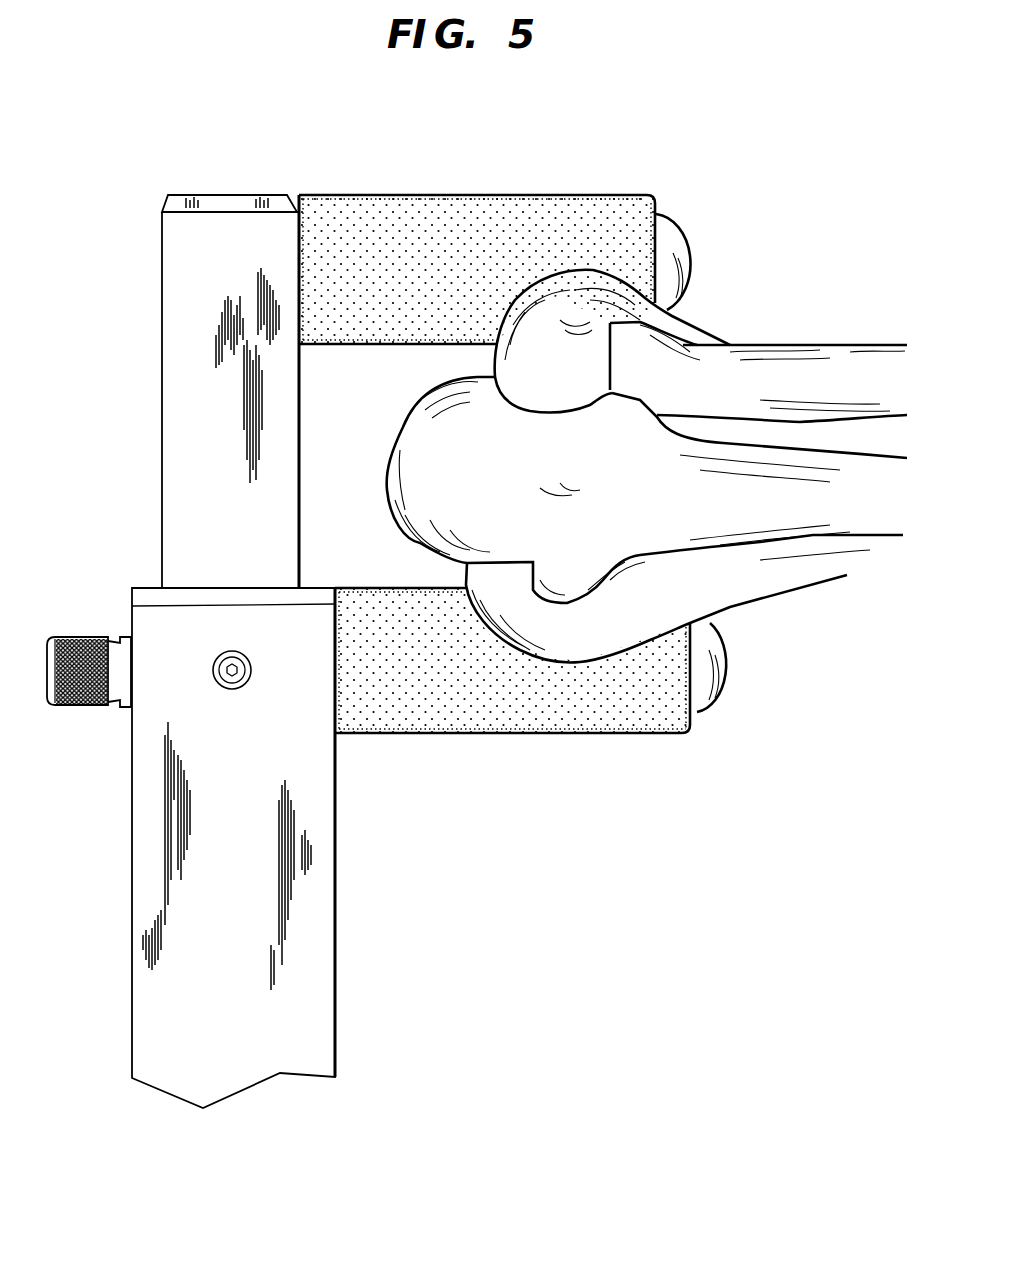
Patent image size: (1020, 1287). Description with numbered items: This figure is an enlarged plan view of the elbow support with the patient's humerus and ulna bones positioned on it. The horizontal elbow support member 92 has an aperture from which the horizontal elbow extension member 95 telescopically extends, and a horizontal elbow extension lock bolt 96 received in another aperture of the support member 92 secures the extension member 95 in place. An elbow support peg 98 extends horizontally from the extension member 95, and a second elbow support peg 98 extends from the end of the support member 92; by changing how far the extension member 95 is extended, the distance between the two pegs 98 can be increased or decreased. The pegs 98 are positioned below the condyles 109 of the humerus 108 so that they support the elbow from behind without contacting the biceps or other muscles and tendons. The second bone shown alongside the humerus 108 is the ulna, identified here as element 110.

The horizontal elbow support member 92 is at (133, 880).
The horizontal elbow extension member 95 is at (178, 450).
The horizontal elbow extension lock bolt 96 is at (73, 637).
The elbow support peg 98 is at (594, 195).
The humerus 108 is at (862, 368).
The condyles 109 is at (550, 308).
The second bone 110 is at (868, 520).